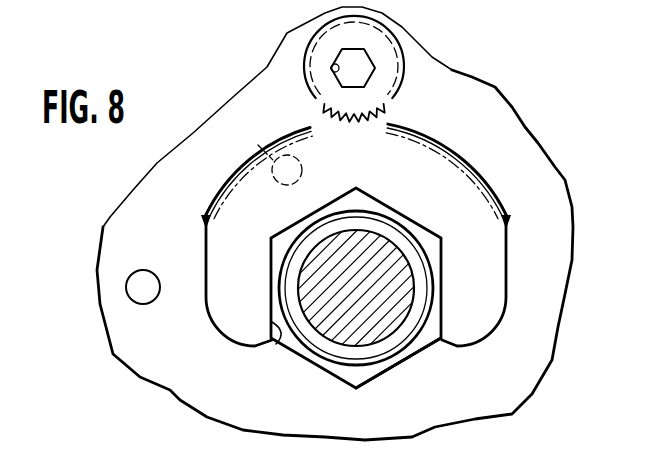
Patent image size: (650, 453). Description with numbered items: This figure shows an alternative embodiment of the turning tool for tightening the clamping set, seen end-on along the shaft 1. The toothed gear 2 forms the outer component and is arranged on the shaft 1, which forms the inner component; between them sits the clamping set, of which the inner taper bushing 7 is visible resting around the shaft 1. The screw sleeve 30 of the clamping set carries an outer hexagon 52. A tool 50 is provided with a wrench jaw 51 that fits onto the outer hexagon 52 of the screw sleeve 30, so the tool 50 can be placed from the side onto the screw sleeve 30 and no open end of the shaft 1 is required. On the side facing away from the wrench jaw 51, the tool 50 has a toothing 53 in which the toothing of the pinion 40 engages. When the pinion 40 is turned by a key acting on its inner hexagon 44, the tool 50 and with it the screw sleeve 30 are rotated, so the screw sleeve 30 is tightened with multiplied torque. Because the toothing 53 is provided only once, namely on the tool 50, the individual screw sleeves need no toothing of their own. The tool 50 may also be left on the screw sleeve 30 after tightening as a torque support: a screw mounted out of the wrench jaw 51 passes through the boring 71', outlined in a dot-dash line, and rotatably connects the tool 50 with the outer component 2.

The shaft 1 is at (305, 290).
The toothed gear 2 is at (522, 130).
The inner taper bushing 7 is at (416, 261).
The screw sleeve 30 is at (362, 196).
The pinion 40 is at (414, 63).
The inner hexagon 44 is at (333, 72).
The tool 50 is at (226, 340).
The wrench jaw 51 is at (283, 334).
The outer hexagon 52 is at (400, 364).
The toothing 53 is at (437, 143).
The boring 71' is at (345, 172).